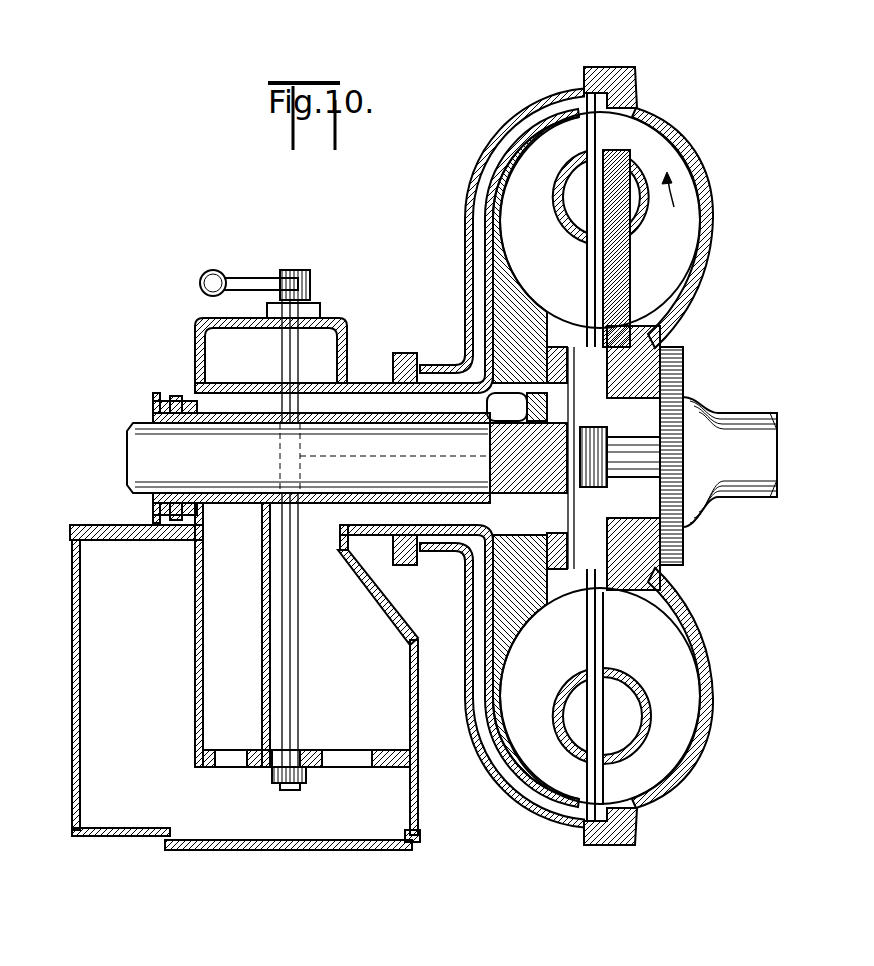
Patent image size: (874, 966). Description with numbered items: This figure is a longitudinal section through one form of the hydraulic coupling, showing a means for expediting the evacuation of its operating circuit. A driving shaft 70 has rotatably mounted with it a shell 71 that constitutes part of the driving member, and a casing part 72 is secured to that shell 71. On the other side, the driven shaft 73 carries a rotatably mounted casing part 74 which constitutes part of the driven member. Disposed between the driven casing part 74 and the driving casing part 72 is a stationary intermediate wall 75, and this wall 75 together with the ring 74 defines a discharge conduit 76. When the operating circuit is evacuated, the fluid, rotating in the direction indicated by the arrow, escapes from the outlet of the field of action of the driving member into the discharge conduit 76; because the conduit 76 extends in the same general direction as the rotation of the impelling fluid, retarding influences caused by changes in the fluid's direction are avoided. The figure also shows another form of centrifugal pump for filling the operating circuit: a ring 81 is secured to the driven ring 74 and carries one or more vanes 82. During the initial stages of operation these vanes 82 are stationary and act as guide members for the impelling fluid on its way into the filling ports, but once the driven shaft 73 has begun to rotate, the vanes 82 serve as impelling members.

The driving shaft 70 is at (719, 428).
The shell 71 is at (640, 113).
The casing part 72 is at (540, 103).
The driven shaft 73 is at (140, 440).
The casing part 74 is at (500, 228).
The stationary intermediate wall 75 is at (492, 150).
The discharge conduit 76 is at (496, 277).
The ring 81 is at (559, 346).
The vanes 82 is at (538, 412).